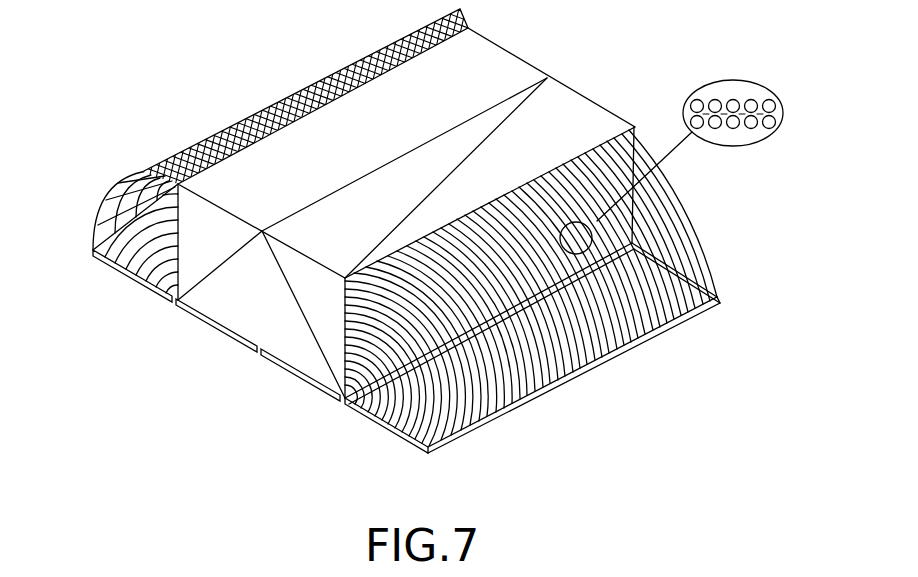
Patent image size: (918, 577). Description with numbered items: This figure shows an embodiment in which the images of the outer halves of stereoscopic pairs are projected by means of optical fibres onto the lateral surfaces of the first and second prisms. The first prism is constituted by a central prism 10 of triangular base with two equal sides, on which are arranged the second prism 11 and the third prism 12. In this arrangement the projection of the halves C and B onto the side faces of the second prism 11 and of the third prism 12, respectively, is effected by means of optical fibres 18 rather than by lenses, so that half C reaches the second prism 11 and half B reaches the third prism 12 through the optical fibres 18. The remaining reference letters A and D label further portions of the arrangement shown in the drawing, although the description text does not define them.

The central prism 10 is at (256, 298).
The second prism 11 is at (202, 233).
The third prism 12 is at (547, 78).
The optical fibres 18 is at (140, 173).
The base plate segment A is at (203, 325).
The half B is at (377, 427).
The half C is at (128, 276).
The base plate segment D is at (295, 375).